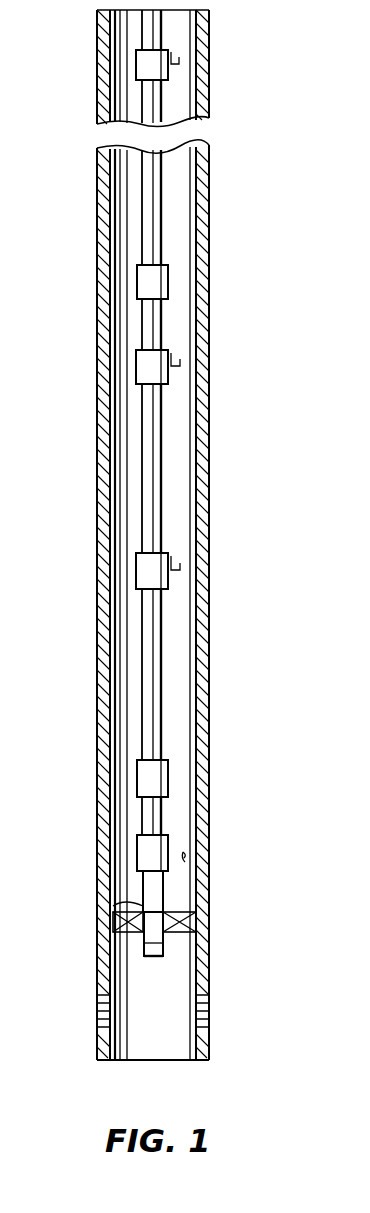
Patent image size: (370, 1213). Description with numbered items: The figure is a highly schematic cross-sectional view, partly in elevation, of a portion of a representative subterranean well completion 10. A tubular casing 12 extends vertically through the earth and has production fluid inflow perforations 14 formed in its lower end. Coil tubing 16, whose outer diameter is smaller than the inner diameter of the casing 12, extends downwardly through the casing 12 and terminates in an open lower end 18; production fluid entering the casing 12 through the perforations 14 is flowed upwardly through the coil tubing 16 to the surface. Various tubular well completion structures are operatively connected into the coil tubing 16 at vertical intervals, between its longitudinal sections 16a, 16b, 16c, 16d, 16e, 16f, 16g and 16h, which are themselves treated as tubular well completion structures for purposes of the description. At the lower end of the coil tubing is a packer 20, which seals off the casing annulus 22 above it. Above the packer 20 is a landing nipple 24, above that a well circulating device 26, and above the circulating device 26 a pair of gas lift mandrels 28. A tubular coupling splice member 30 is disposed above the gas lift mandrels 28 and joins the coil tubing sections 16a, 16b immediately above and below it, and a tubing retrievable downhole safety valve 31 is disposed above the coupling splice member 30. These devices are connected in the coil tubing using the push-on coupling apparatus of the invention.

The subterranean well completion 10 is at (213, 456).
The tubular casing 12 is at (198, 627).
The production fluid inflow perforations 14 is at (209, 1026).
The coil tubing 16 is at (137, 462).
The longitudinal section of coil tubing 16a is at (140, 31).
The longitudinal section of coil tubing 16b is at (140, 107).
The longitudinal section of coil tubing 16c is at (140, 326).
The longitudinal section of coil tubing 16d is at (140, 416).
The longitudinal section of coil tubing 16e is at (140, 646).
The longitudinal section of coil tubing 16f is at (140, 812).
The longitudinal section of coil tubing 16g is at (170, 883).
The longitudinal section of coil tubing 16h is at (145, 950).
The open lower end 18 is at (150, 957).
The packer 20 is at (120, 912).
The casing annulus 22 is at (186, 857).
The landing nipple 24 is at (137, 852).
The well circulating device 26 is at (137, 777).
The gas lift mandrels 28 is at (136, 366).
The tubular coupling splice member 30 is at (137, 283).
The tubing retrievable downhole safety valve 31 is at (136, 66).